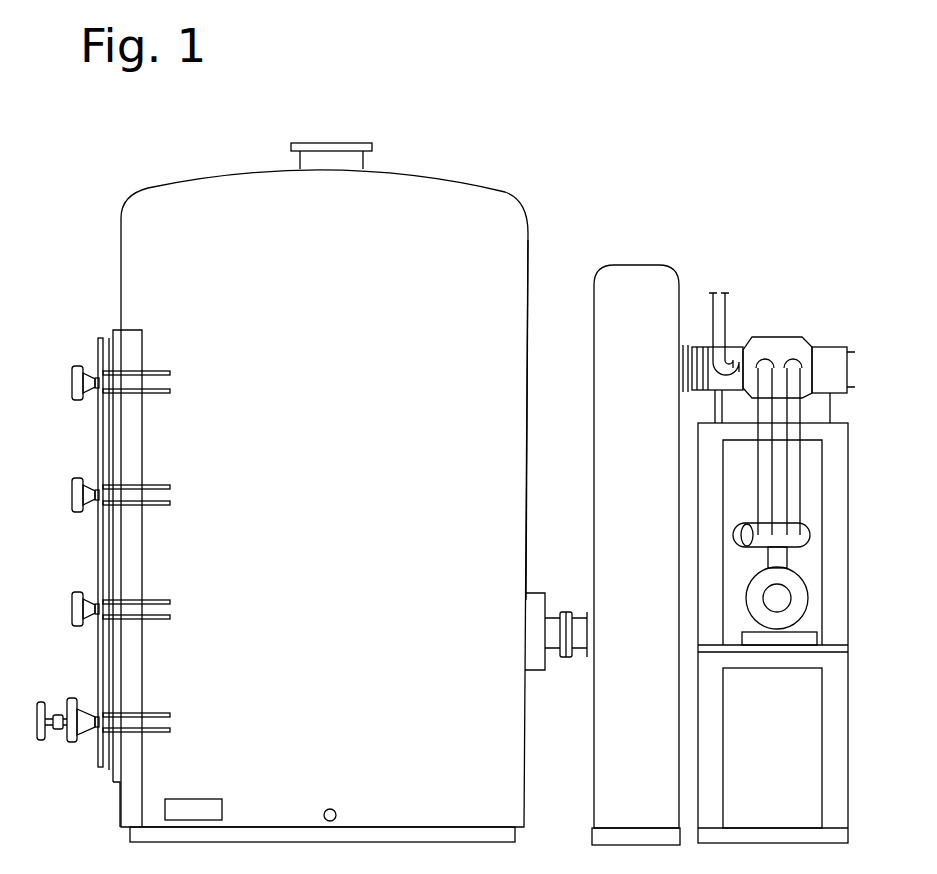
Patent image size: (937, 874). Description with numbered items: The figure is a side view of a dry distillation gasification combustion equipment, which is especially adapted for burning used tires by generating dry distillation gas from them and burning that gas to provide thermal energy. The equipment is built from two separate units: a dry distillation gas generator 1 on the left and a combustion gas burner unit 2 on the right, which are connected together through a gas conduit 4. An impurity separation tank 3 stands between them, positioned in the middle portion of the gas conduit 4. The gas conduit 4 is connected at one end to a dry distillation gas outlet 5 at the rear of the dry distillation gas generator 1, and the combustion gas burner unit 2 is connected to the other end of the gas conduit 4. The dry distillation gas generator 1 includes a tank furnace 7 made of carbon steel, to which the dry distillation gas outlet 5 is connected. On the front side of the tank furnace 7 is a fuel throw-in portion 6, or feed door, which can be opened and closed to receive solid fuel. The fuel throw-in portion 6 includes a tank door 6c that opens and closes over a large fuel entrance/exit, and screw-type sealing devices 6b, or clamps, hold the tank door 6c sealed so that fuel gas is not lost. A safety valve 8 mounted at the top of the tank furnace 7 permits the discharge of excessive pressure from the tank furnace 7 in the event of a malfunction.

The dry distillation gas generator 1 is at (446, 215).
The combustion gas burner unit 2 is at (832, 345).
The impurity separation tank 3 is at (643, 295).
The gas conduit 4 is at (690, 355).
The dry distillation gas outlet 5 is at (550, 623).
The fuel throw-in portion 6 is at (125, 437).
The screw-type sealing device 6b is at (80, 365).
The tank door 6c is at (100, 546).
The tank furnace 7 is at (528, 335).
The safety valve 8 is at (327, 160).